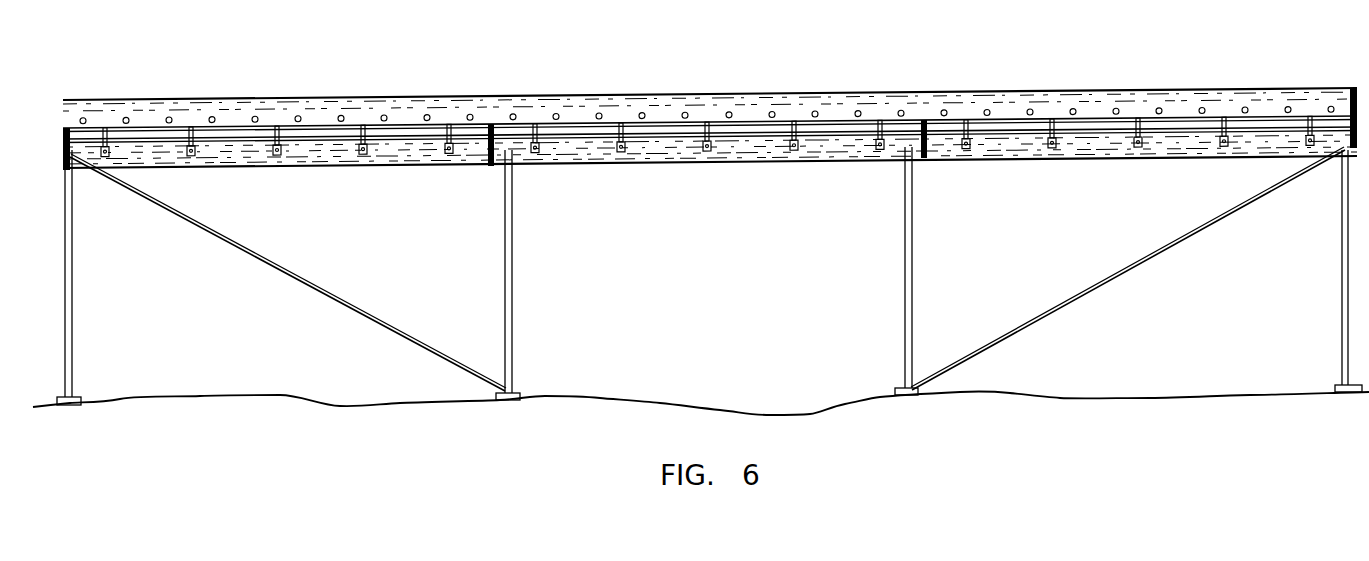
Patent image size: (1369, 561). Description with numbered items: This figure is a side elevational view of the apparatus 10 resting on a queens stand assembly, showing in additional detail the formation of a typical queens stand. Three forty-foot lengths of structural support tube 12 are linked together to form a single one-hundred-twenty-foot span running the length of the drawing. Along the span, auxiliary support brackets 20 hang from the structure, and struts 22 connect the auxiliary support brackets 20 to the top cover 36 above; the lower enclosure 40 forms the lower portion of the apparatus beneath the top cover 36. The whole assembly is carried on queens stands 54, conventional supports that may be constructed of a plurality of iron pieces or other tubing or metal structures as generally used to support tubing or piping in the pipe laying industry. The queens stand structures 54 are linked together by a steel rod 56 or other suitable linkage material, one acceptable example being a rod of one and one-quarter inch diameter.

The apparatus 10 is at (514, 68).
The structural support tube 12 is at (681, 152).
The auxiliary support bracket 20 is at (537, 154).
The strut 22 is at (623, 154).
The top cover 36 is at (841, 104).
The lower enclosure 40 is at (830, 128).
The queens stand 54 is at (512, 226).
The steel rod 56 is at (304, 282).